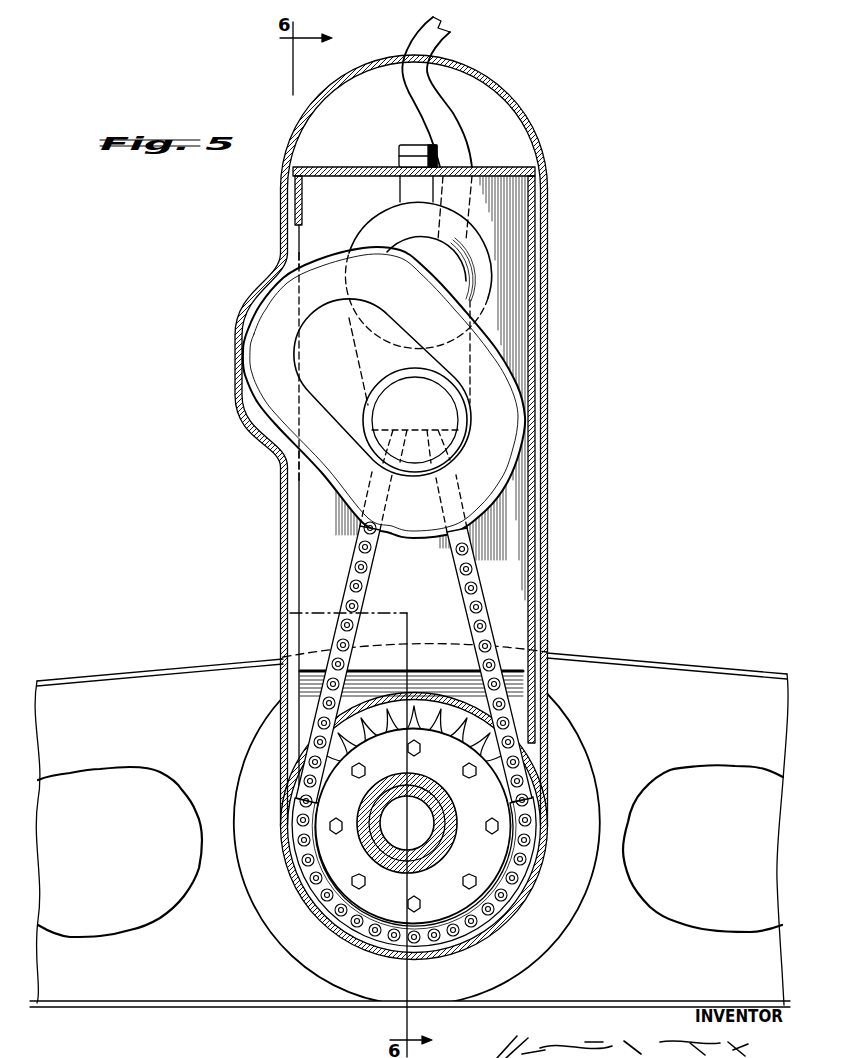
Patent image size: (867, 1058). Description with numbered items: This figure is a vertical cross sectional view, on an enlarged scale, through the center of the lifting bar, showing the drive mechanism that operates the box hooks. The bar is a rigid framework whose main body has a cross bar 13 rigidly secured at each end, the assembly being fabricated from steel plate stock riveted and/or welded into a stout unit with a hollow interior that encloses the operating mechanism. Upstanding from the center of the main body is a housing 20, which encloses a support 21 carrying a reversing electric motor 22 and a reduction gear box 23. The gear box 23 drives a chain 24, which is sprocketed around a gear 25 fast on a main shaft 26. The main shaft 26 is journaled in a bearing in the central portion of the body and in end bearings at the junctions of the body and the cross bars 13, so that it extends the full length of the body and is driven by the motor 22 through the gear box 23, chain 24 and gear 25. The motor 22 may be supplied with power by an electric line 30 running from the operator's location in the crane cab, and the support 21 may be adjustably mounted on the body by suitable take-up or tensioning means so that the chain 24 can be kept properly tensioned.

The cross bar 13 is at (613, 657).
The housing 20 is at (547, 386).
The support 21 is at (529, 312).
The reversing electric motor 22 is at (378, 228).
The reduction gear box 23 is at (259, 339).
The chain 24 is at (371, 591).
The gear 25 is at (490, 750).
The main shaft 26 is at (449, 833).
The electric line 30 is at (426, 36).